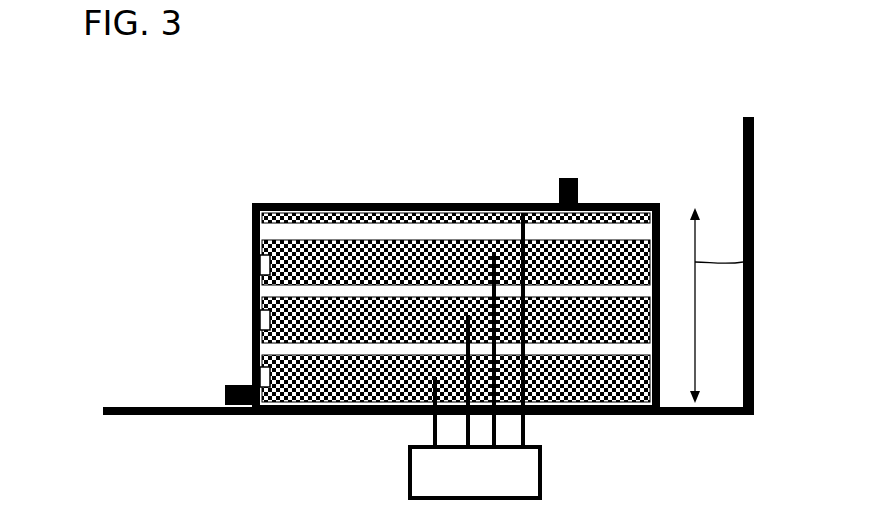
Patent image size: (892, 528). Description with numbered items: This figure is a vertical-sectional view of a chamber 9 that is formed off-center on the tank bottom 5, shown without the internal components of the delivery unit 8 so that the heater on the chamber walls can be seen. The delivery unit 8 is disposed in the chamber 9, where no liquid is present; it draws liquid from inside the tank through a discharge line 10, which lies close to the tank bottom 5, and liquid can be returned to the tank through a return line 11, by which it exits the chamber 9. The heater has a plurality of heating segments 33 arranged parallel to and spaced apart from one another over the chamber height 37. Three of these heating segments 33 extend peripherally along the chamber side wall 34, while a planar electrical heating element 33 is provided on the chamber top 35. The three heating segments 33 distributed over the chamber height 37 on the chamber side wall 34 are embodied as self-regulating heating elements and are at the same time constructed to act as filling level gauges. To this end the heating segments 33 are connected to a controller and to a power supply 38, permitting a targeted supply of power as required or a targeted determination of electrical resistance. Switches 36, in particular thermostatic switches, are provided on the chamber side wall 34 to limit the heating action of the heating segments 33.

The tank bottom 5 is at (137, 406).
The delivery unit 8 is at (212, 186).
The chamber 9 is at (638, 168).
The discharge line 10 is at (237, 405).
The return line 11 is at (572, 178).
The heating segments 33 is at (380, 320).
The chamber side wall 34 is at (660, 328).
The chamber top 35 is at (332, 203).
The switches 36 is at (252, 262).
The chamber height 37 is at (748, 238).
The power supply 38 is at (522, 472).